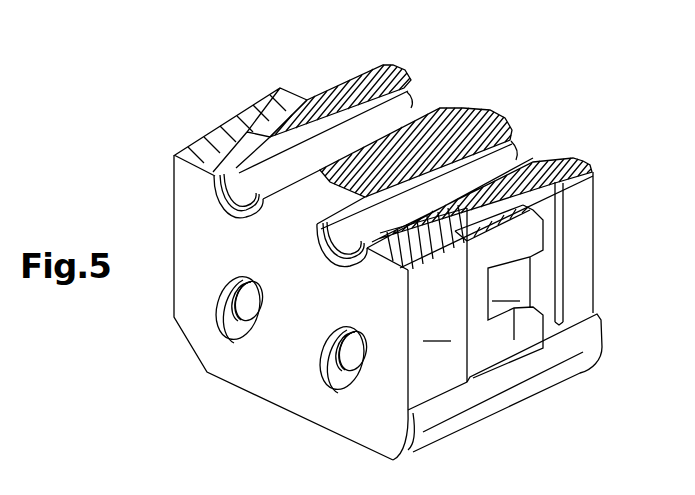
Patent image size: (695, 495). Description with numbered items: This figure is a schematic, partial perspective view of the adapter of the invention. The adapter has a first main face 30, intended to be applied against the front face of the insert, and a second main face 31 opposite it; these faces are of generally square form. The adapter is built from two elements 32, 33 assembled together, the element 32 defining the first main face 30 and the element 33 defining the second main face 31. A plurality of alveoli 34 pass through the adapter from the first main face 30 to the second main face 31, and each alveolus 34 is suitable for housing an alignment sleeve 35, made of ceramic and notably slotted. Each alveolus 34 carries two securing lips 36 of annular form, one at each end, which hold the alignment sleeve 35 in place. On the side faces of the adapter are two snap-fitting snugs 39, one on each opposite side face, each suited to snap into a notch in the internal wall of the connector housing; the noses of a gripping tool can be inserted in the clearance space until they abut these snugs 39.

The first main face 30 is at (383, 427).
The second main face 31 is at (593, 277).
The element 32 is at (373, 80).
The element 33 is at (208, 152).
The alveolus 34 is at (465, 115).
The alignment sleeve 35 is at (507, 155).
The securing lip 36 is at (412, 95).
The snap-fitting snug 39 is at (512, 345).